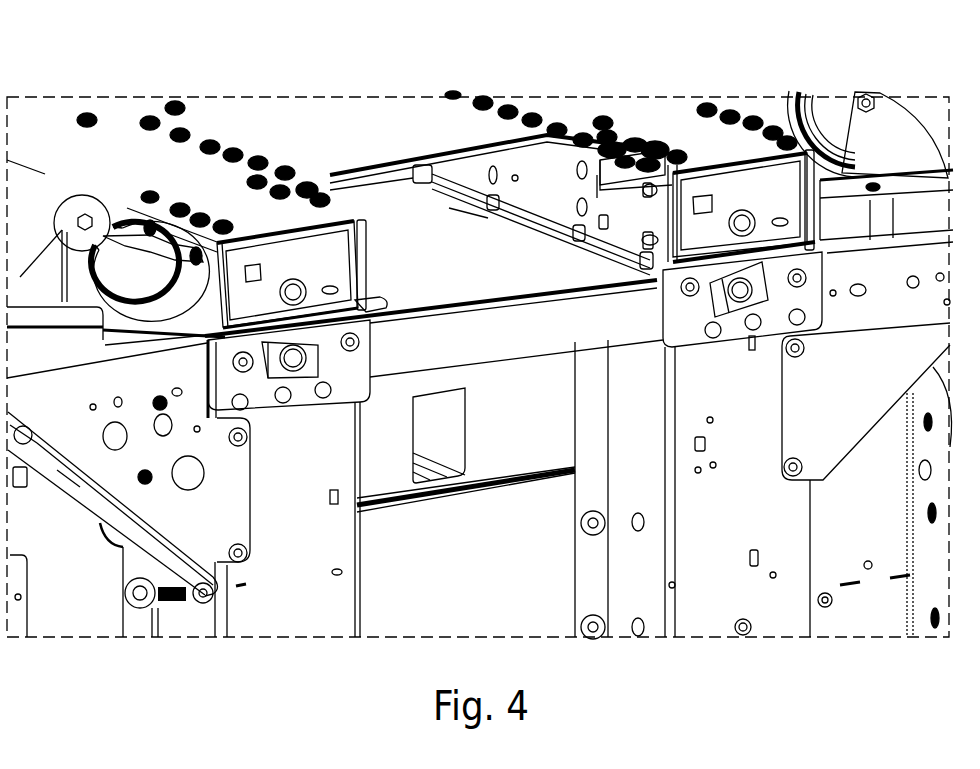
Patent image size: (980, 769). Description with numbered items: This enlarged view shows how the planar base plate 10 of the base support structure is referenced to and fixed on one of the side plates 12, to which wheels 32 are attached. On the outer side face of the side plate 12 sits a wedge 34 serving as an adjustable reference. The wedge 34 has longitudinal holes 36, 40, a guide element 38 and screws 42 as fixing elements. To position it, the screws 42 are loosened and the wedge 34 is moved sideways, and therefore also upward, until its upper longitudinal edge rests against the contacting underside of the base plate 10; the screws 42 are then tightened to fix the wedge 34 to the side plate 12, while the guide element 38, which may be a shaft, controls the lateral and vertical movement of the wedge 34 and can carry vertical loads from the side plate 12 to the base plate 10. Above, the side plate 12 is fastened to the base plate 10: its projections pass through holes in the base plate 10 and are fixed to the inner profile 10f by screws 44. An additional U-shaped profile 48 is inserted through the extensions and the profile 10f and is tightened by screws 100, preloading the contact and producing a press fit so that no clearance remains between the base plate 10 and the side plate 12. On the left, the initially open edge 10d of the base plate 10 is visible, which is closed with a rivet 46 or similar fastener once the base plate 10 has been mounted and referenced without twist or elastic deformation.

The base plate 10 is at (50, 125).
The open edge 10d is at (200, 238).
The inner profile 10f is at (470, 163).
The side plate 12 is at (760, 412).
The wheels 32 is at (910, 140).
The wedge 34 is at (353, 370).
The longitudinal hole 36 is at (372, 302).
The guide element 38 is at (298, 340).
The longitudinal hole 40 is at (250, 326).
The screws 42 is at (185, 378).
The screws 44 is at (665, 165).
The rivet 46 is at (150, 215).
The U-shaped profile 48 is at (612, 135).
The screws 100 is at (645, 125).